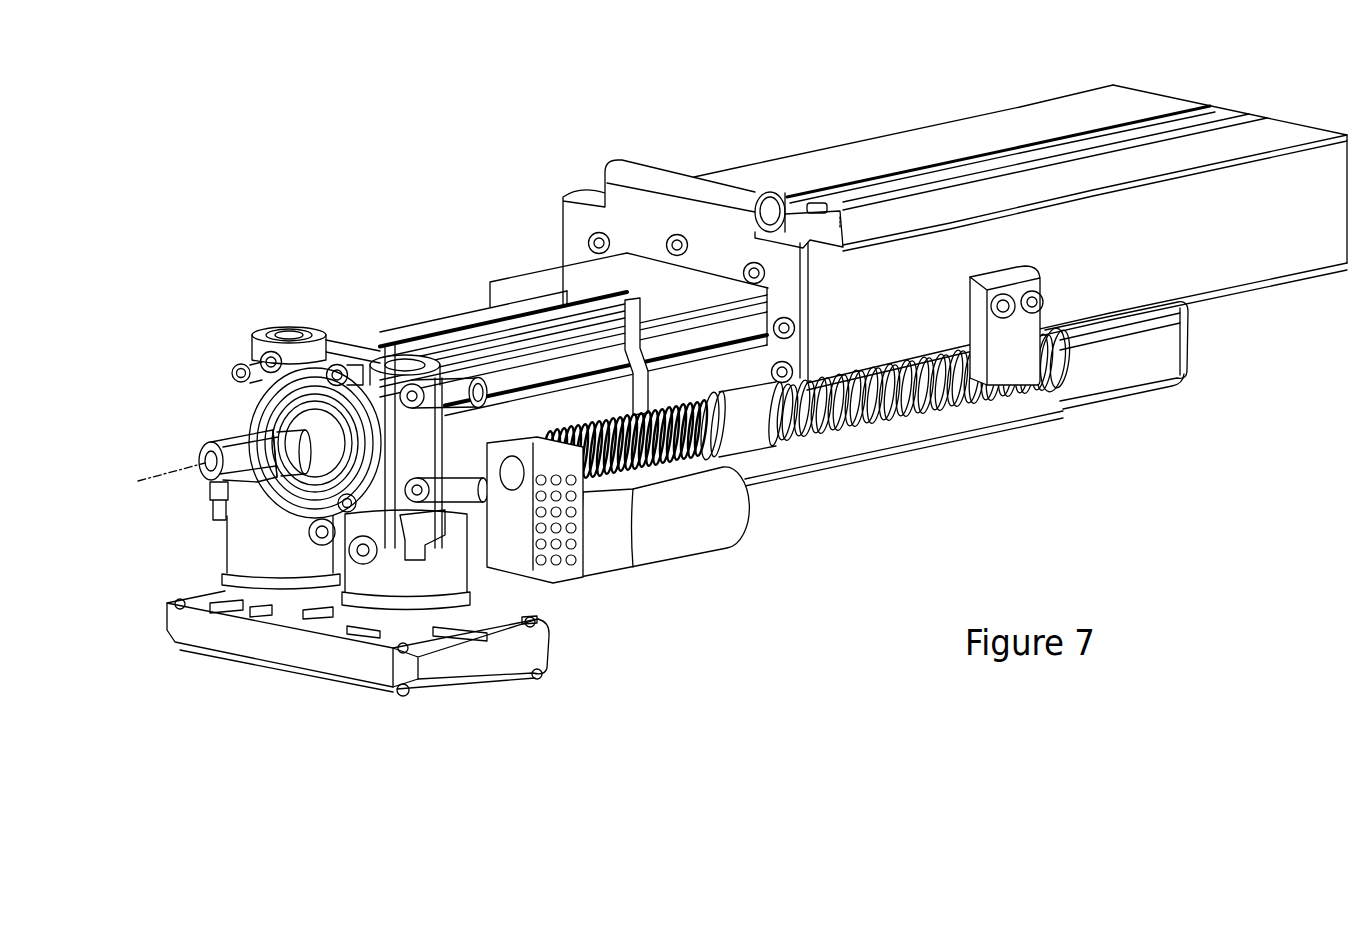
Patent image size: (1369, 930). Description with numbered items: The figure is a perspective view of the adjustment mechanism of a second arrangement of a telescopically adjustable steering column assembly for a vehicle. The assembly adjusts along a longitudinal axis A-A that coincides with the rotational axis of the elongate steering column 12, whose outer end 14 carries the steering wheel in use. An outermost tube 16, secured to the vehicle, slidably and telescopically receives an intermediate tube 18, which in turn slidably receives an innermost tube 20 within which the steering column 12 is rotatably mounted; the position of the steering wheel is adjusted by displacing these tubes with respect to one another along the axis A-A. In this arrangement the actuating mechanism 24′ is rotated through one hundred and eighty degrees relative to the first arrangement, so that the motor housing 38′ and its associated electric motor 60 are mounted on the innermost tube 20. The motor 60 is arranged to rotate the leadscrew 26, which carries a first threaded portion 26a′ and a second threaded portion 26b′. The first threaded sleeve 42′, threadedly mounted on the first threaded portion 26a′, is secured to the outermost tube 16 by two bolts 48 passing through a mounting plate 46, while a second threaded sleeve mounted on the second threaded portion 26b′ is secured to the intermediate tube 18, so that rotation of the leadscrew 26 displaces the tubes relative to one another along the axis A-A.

The outermost elongate tube 16 is at (998, 113).
The intermediate elongate tube 18 is at (550, 283).
The innermost elongate tube 20 is at (450, 323).
The elongate steering column 12 is at (233, 368).
The outer end 14 is at (228, 438).
The longitudinal axis A is at (161, 481).
The securing bolts 48 is at (1022, 293).
The mounting plate 46 is at (1008, 352).
The leadscrew 26 is at (863, 431).
The first threaded portion 26a′ is at (932, 397).
The second threaded portion 26b′ is at (630, 480).
The first threaded sleeve 42′ is at (747, 440).
The actuating mechanism 24′ is at (796, 505).
The electric motor 60 is at (683, 527).
The motor housing 38′ is at (570, 573).